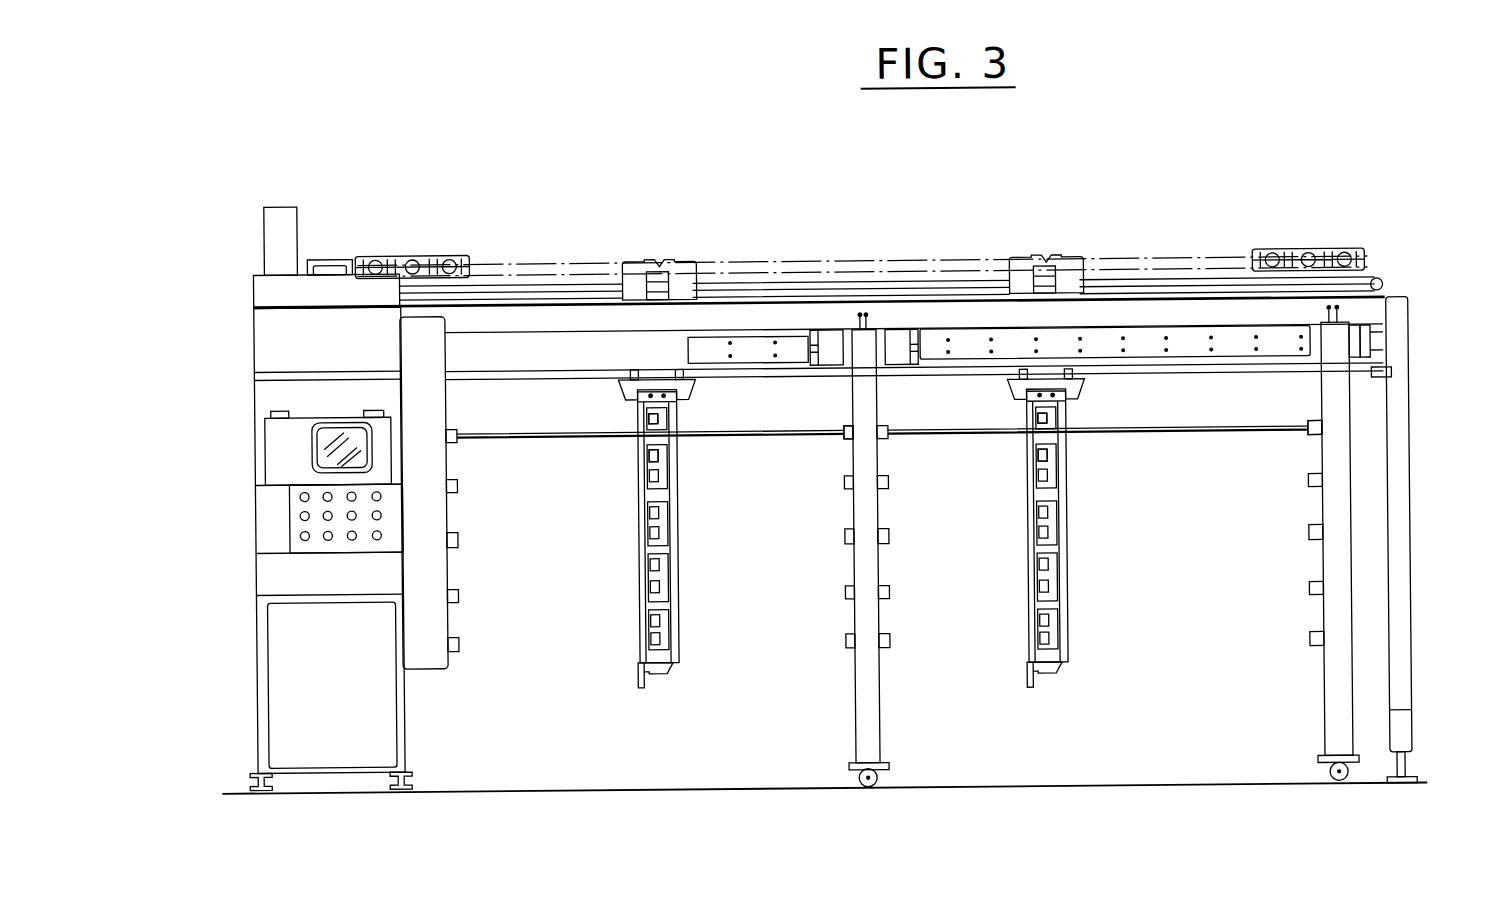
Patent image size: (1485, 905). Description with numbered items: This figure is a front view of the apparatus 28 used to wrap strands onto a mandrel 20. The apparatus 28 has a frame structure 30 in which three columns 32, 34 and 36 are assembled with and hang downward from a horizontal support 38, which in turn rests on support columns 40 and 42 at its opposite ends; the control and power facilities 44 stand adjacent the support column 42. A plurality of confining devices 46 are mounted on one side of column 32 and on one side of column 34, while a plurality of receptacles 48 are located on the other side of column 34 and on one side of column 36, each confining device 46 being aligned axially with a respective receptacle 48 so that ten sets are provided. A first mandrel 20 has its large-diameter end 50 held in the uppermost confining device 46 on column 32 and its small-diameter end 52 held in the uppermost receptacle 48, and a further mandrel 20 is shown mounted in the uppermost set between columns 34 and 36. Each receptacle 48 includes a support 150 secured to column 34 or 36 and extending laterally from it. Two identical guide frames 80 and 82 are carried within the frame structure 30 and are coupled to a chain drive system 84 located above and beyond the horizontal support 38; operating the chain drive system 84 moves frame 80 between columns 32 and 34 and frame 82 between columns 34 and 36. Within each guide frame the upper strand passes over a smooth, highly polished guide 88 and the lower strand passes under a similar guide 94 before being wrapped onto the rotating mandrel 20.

The mandrel 20 is at (552, 445).
The apparatus 28 is at (633, 226).
The frame structure 30 is at (980, 285).
The column 32 is at (432, 665).
The column 34 is at (860, 727).
The column 36 is at (1330, 700).
The horizontal support 38 is at (1145, 322).
The support column 40 is at (1402, 610).
The support column 42 is at (270, 395).
The control and power facilities 44 is at (255, 545).
The confining device 46 is at (462, 440).
The receptacle 48 is at (840, 442).
The large-diameter end 50 is at (508, 424).
The small-diameter end 52 is at (840, 432).
The guide frame 80 is at (672, 682).
The guide frame 82 is at (1060, 685).
The chain drive system 84 is at (403, 248).
The guide 88 is at (655, 418).
The guide 94 is at (656, 450).
The support 150 is at (845, 488).